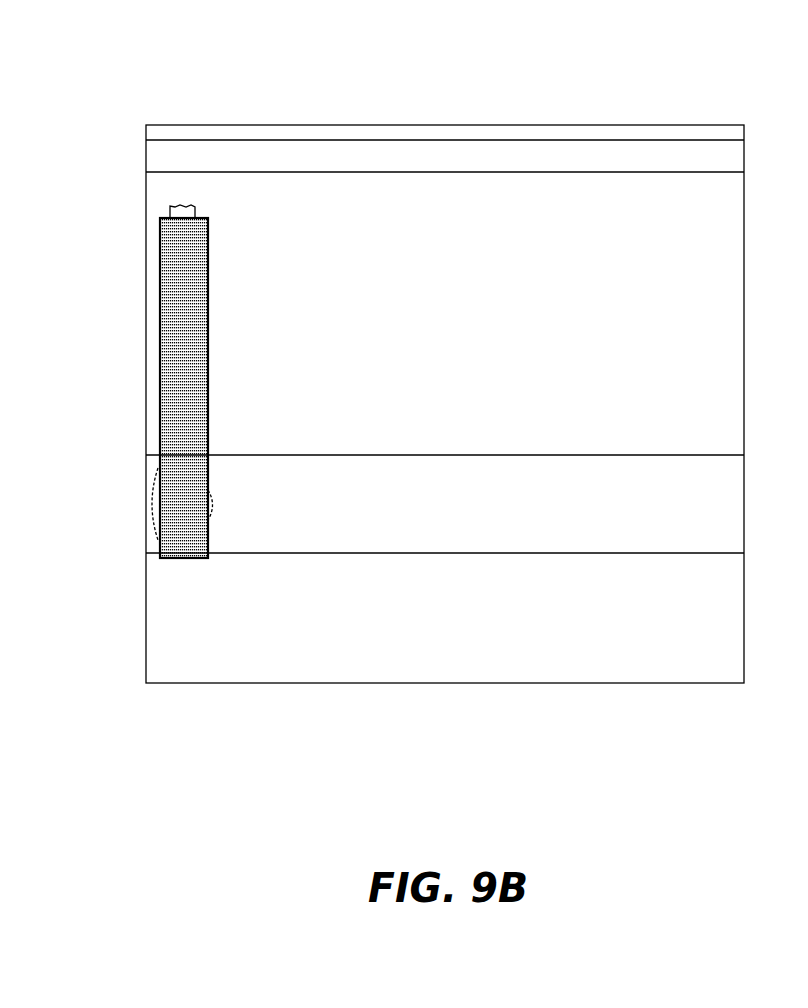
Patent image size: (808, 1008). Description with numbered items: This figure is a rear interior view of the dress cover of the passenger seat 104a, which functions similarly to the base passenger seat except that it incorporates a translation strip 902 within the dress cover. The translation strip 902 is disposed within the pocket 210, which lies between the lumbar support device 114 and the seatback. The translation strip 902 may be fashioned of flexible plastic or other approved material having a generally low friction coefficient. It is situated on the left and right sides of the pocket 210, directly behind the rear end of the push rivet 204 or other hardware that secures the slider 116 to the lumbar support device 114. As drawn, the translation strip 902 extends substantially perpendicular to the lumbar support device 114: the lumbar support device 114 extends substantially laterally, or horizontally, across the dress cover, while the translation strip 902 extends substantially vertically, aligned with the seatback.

The passenger seat 104a is at (388, 397).
The push rivet 204 is at (183, 208).
The pocket 210 is at (496, 145).
The translation strip 902 is at (185, 405).
The slider 116 is at (152, 505).
The lumbar support device 114 is at (393, 500).